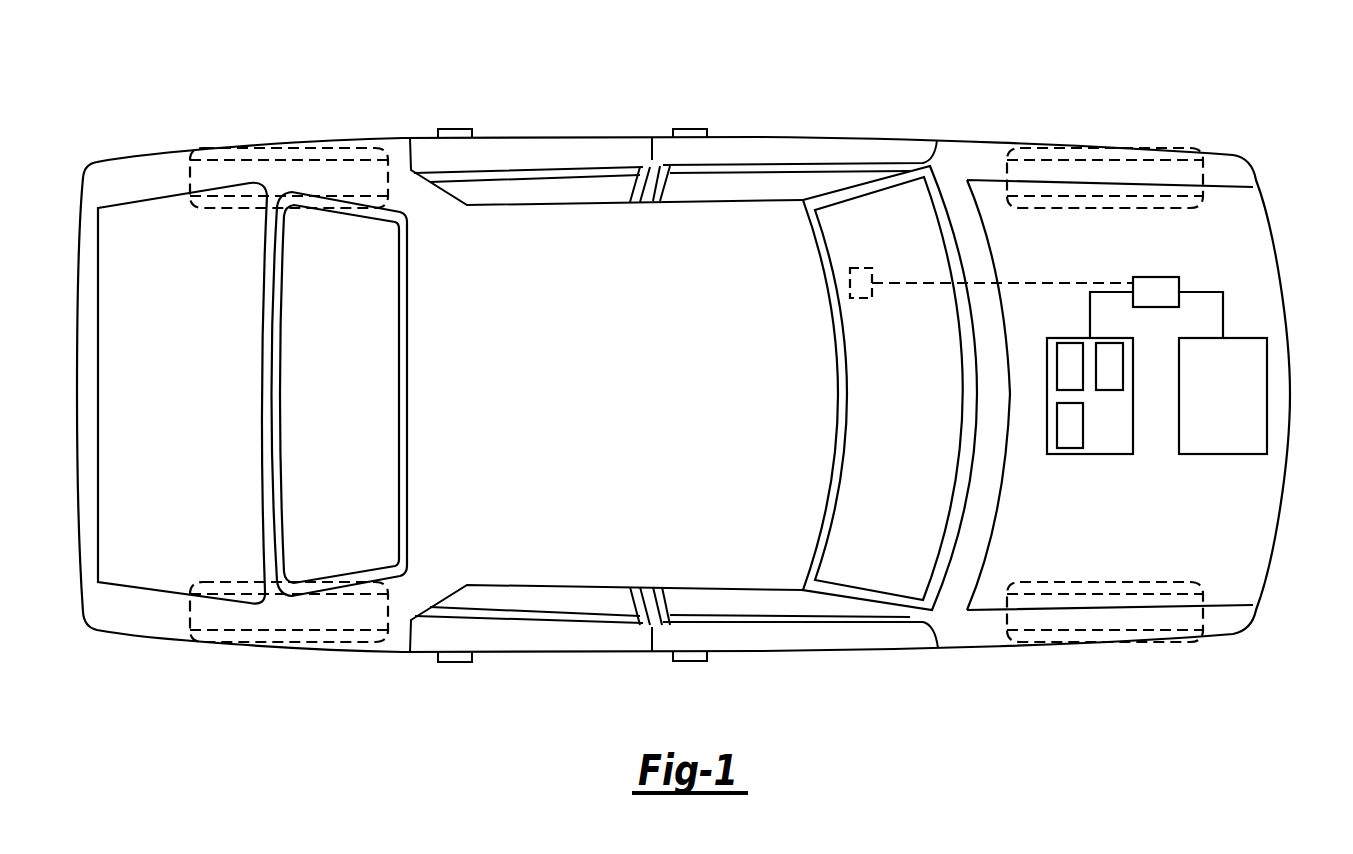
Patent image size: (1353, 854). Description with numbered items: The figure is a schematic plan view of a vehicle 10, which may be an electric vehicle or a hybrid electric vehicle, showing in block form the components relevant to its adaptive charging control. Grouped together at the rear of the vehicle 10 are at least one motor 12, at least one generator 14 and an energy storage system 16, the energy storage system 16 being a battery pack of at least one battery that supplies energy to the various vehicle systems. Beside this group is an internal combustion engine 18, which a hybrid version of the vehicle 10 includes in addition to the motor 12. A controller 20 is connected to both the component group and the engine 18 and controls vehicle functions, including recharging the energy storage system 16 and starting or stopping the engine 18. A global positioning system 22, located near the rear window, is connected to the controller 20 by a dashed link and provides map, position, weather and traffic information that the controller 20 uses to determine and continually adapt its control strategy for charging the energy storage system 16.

The vehicle 10 is at (466, 86).
The motor 12 is at (1081, 381).
The generator 14 is at (1120, 381).
The energy storage system 16 is at (1081, 439).
The internal combustion engine 18 is at (1267, 398).
The controller 20 is at (1155, 277).
The global positioning system 22 is at (862, 268).